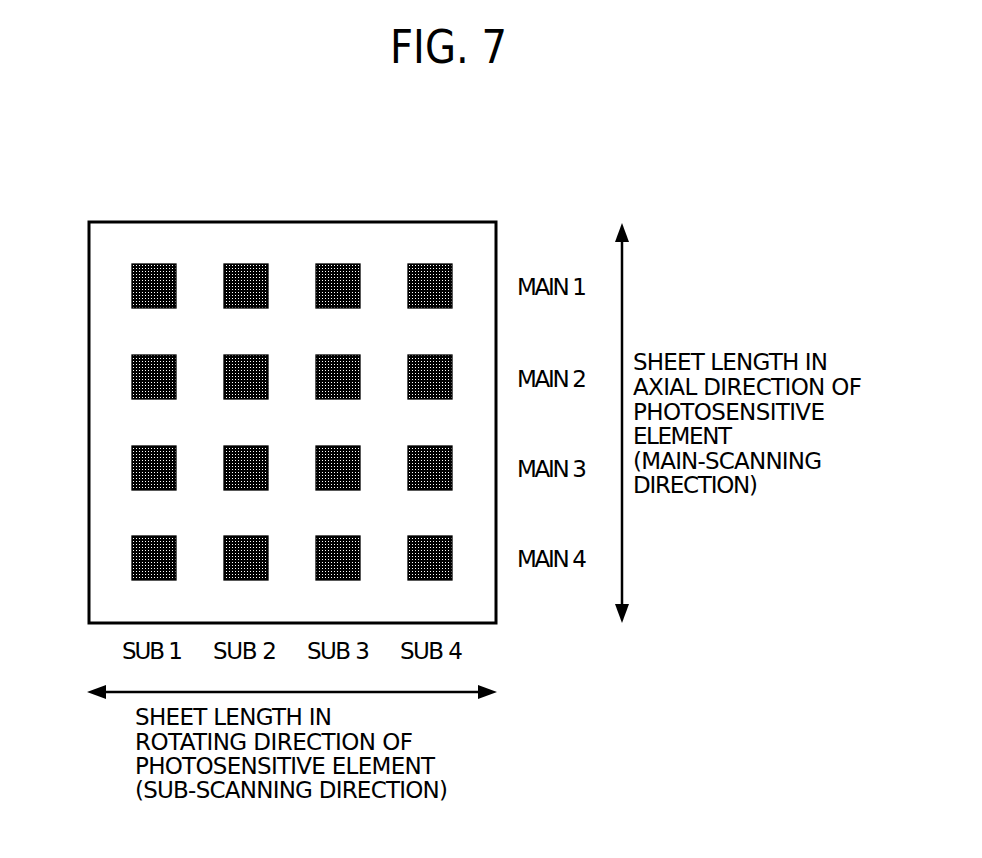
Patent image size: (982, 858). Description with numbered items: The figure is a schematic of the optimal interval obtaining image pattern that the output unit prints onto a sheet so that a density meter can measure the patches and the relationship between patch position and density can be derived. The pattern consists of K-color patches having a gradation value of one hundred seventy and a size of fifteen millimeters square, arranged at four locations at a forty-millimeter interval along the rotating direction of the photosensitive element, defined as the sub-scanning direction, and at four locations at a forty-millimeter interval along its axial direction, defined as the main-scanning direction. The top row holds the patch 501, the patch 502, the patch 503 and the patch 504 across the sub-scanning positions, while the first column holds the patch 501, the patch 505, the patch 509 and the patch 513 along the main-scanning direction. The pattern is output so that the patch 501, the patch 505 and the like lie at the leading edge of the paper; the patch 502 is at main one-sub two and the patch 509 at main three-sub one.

The patch 501 is at (152, 263).
The patch 502 is at (245, 263).
The patch 503 is at (339, 263).
The patch 504 is at (433, 263).
The patch 505 is at (131, 375).
The patch 509 is at (131, 465).
The patch 513 is at (131, 555).